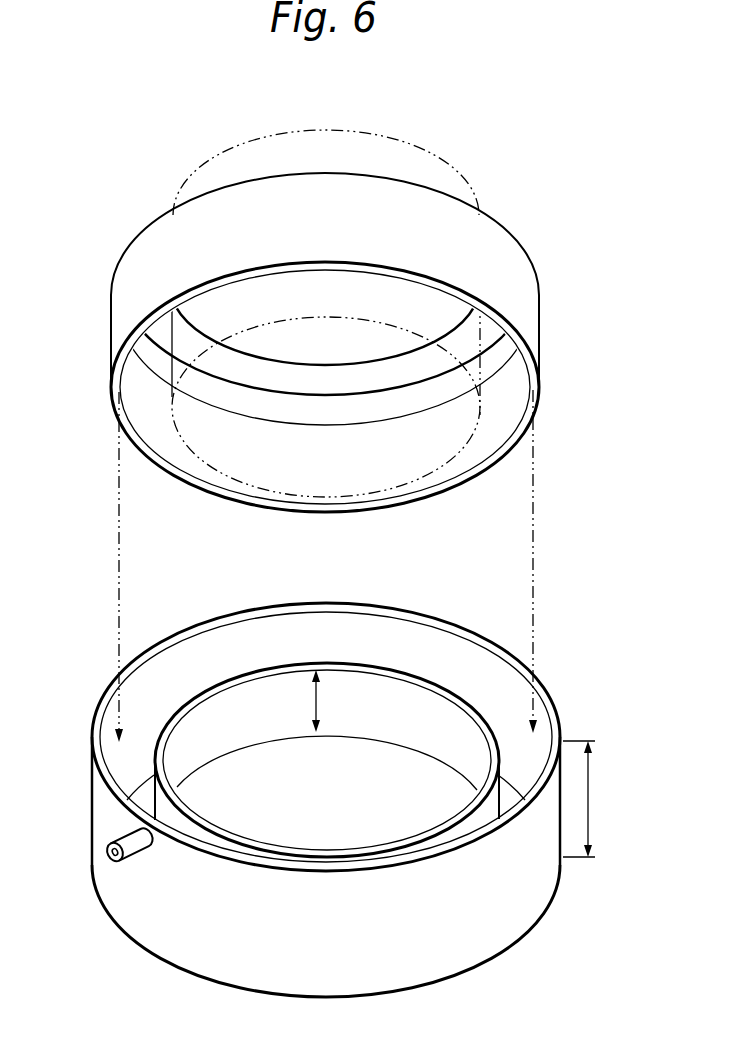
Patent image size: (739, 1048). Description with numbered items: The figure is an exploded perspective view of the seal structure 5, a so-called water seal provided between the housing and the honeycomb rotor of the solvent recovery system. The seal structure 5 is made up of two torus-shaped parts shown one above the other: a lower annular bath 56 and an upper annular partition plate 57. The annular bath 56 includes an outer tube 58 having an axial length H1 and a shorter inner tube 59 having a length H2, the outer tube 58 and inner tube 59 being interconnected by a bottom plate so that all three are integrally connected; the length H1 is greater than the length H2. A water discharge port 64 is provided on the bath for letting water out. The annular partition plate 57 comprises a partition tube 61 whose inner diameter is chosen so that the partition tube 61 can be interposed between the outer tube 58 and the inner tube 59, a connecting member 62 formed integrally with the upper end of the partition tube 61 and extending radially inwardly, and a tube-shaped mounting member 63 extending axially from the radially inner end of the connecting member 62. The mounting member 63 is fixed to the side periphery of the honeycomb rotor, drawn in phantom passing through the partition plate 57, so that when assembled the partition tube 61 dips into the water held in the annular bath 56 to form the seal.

The seal structure 5 is at (547, 177).
The annular bath 56 is at (469, 614).
The annular partition plate 57 is at (103, 253).
The outer tube 58 is at (548, 707).
The inner tube 59 is at (345, 677).
The partition tube 61 is at (528, 318).
The connecting member 62 is at (207, 382).
The mounting member 63 is at (340, 378).
The water discharge port 64 is at (133, 842).
The axial length of outer tube H1 is at (590, 796).
The length of inner tube H2 is at (318, 704).